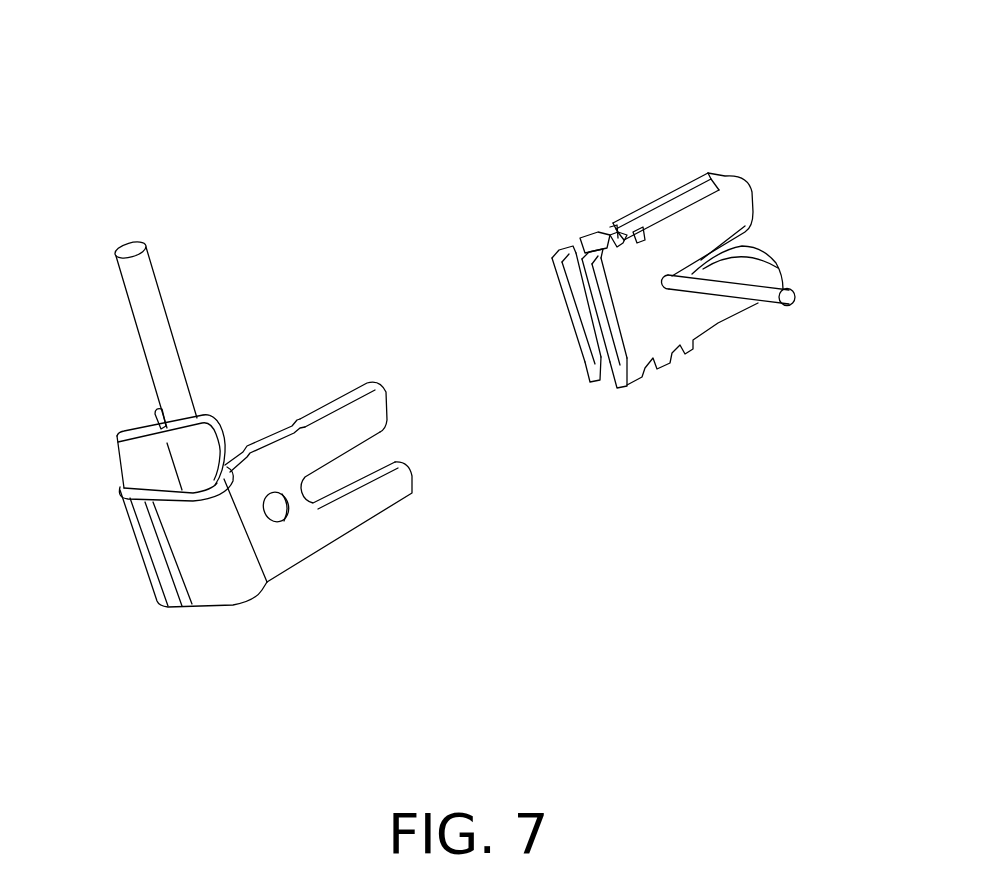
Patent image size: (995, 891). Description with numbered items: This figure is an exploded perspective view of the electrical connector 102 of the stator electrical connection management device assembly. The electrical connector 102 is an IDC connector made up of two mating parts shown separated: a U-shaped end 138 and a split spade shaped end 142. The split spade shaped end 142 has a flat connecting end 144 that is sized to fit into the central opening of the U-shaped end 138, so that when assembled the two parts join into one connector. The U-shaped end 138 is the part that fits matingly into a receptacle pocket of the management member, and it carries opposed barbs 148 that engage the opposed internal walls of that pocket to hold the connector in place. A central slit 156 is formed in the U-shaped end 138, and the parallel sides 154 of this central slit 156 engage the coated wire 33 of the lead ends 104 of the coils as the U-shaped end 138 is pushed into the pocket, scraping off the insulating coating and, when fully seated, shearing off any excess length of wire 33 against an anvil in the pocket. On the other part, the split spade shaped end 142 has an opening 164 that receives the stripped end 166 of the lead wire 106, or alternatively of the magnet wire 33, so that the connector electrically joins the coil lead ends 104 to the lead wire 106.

The electrical connector 102 is at (180, 719).
The lead ends 104 is at (843, 131).
The lead wire 106 is at (155, 268).
The split spade shaped end 142 is at (330, 606).
The flat connecting end 144 is at (340, 397).
The opening 164 is at (218, 390).
The stripped end 166 is at (143, 427).
The U-shaped end 138 is at (647, 210).
The opposed barbs 148 is at (692, 352).
The parallel sides 154 is at (745, 262).
The central slit 156 is at (763, 232).
The wire 33 is at (770, 303).